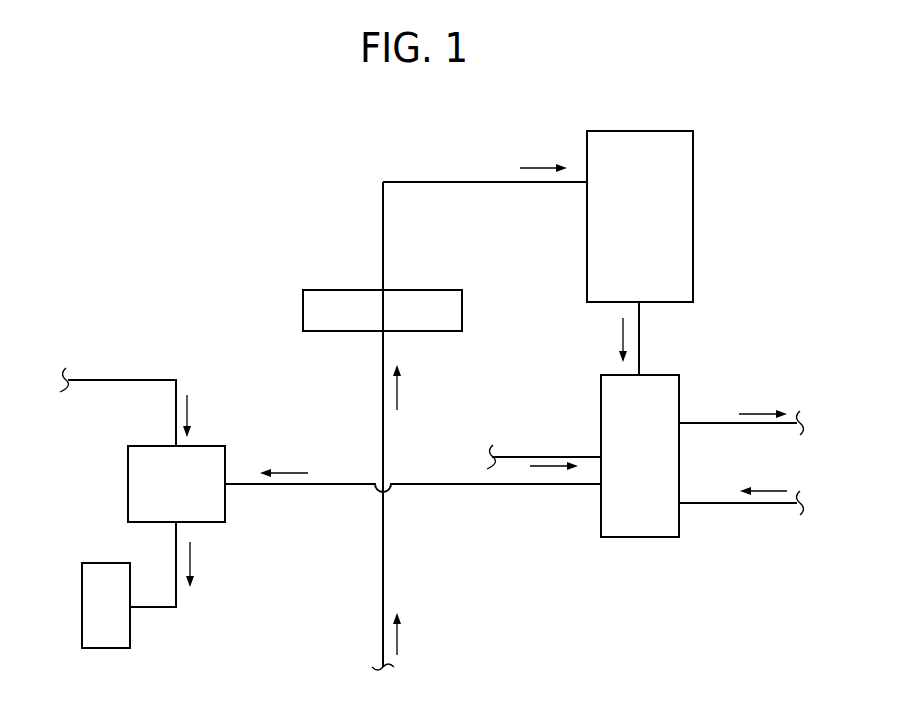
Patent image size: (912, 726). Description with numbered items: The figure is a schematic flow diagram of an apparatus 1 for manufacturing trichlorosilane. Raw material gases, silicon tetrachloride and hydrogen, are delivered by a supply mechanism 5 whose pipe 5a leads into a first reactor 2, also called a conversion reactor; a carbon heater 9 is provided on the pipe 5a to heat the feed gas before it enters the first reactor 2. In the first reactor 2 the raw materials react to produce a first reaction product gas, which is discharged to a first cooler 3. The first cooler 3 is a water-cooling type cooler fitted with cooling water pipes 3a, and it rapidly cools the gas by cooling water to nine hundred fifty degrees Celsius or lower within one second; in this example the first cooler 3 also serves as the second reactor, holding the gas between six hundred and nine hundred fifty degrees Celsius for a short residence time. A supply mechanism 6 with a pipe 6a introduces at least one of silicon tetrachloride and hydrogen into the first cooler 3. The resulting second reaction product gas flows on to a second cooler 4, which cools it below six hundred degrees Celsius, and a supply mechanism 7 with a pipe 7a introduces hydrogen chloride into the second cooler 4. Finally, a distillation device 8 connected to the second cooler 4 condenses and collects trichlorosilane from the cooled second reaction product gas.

The apparatus for manufacturing trichlorosilane 1 is at (196, 195).
The first reactor 2 is at (693, 165).
The first cooler 3 is at (601, 425).
The cooling water pipes 3a is at (721, 532).
The second cooler 4 is at (160, 446).
The supply mechanism 5 is at (393, 570).
The pipe 5a is at (435, 182).
The supply mechanism 6 is at (507, 448).
The pipe 6a is at (526, 455).
The supply mechanism 7 is at (118, 372).
The pipe 7a is at (163, 380).
The distillation device 8 is at (82, 605).
The carbon heater 9 is at (462, 311).